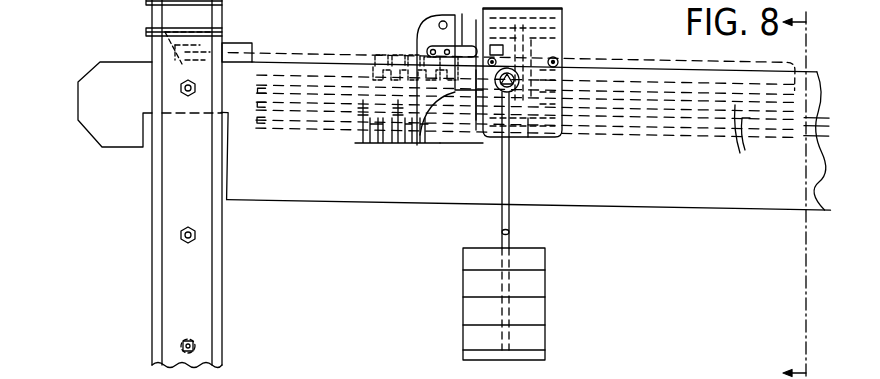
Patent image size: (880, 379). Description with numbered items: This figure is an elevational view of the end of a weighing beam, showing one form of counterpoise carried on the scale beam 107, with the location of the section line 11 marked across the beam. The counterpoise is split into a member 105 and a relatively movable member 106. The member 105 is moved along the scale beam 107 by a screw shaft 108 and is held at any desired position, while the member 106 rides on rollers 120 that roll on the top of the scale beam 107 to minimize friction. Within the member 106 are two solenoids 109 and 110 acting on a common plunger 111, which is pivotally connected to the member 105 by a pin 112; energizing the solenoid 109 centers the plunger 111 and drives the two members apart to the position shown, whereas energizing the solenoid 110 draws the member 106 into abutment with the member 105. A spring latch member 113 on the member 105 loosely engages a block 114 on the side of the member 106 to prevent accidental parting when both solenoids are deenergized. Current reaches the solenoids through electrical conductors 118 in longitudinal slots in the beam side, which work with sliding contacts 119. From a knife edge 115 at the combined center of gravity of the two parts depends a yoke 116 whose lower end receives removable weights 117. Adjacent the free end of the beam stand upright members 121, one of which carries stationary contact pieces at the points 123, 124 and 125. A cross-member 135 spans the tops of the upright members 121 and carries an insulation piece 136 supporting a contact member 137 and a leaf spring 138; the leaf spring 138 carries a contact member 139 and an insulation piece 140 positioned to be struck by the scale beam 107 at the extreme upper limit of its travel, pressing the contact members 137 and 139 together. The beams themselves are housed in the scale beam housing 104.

The section line 11- 11 is at (809, 22).
The scale beam housing 104 is at (449, 68).
The member 105 is at (430, 33).
The relatively movable member 106 is at (562, 138).
The scale beam 107 is at (683, 200).
The screw shaft 108 is at (392, 58).
The solenoid 109 is at (452, 45).
The solenoid 110 is at (565, 11).
The plunger 111 is at (466, 23).
The pin 112 is at (440, 24).
The spring latch member 113 is at (486, 20).
The block 114 is at (500, 8).
The knife edge 115 is at (507, 93).
The yoke 116 is at (514, 192).
The removable weights 117 is at (538, 315).
The electrical conductors 118 is at (749, 137).
The sliding contacts 119 is at (522, 135).
The rollers 120 is at (565, 60).
The upright members 121 is at (222, 117).
The point 123 is at (180, 346).
The point 124 is at (180, 237).
The point 125 is at (178, 90).
The cross-member 135 is at (148, 4).
The insulation piece 136 is at (190, 28).
The contact member 137 is at (198, 50).
The leaf spring 138 is at (150, 36).
The contact member 139 is at (253, 57).
The insulation piece 140 is at (187, 65).